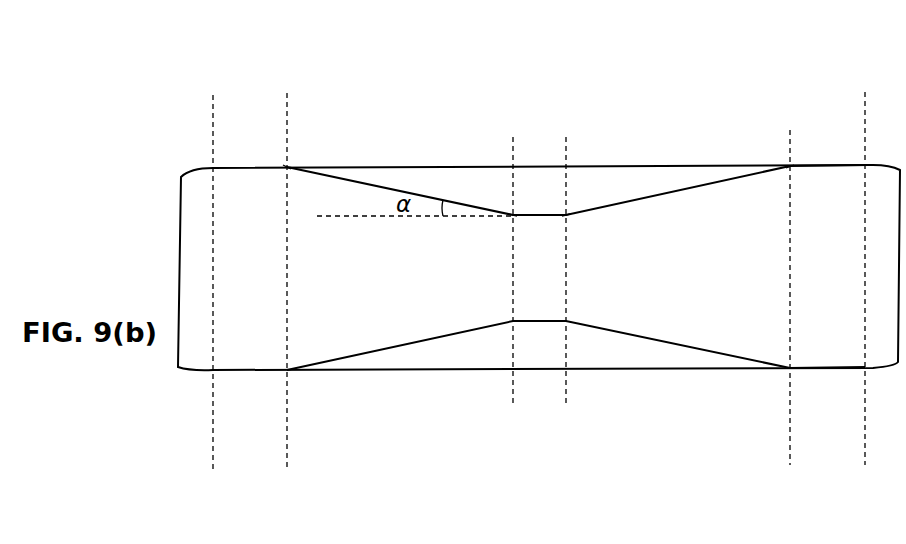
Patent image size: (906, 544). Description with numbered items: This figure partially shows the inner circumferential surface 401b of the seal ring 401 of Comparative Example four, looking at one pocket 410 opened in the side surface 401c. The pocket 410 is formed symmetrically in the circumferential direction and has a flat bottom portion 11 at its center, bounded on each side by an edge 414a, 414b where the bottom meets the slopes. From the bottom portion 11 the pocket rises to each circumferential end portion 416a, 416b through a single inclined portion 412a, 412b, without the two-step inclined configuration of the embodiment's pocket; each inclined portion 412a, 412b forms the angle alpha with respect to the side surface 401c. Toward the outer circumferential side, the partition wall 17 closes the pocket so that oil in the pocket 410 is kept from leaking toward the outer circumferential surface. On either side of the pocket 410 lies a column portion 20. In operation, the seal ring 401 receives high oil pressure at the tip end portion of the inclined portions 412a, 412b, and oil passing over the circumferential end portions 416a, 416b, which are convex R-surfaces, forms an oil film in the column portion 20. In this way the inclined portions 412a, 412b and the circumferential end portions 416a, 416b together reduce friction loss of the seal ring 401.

The seal ring 401 is at (684, 112).
The inner circumferential surface 401b is at (660, 312).
The side surface 401c is at (823, 164).
The partition wall 17 is at (640, 194).
The bottom portion 11 is at (566, 406).
The column portion 20 is at (287, 474).
The pocket 410 is at (790, 474).
The inclined portion 412a is at (513, 406).
The inclined portion 412b is at (790, 406).
The inner boundary 414a is at (512, 214).
The inner boundary 414b is at (566, 214).
The circumferential end portion 416a is at (288, 167).
The circumferential end portion 416b is at (789, 165).